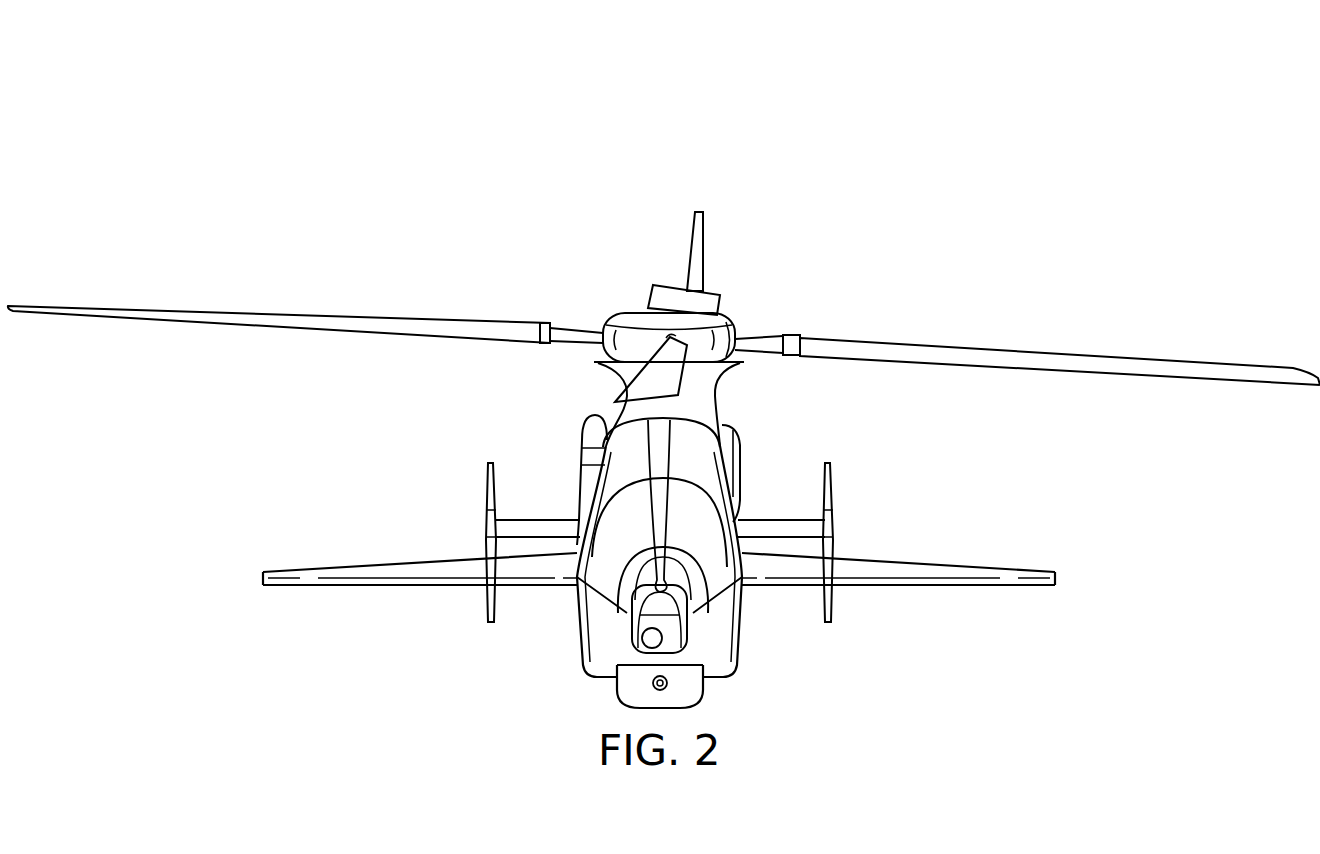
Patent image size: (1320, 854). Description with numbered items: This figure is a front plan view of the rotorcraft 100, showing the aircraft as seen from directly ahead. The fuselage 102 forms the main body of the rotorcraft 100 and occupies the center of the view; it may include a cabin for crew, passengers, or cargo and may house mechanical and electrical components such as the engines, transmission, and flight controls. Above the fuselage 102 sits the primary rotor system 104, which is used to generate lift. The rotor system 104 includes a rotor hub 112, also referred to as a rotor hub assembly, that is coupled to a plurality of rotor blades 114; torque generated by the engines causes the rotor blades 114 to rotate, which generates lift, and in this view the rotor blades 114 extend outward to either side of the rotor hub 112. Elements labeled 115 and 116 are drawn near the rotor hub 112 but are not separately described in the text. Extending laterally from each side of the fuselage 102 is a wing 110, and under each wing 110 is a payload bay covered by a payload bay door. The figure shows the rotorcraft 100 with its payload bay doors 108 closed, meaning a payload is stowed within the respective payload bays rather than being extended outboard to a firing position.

The rotorcraft 100 is at (286, 163).
The fuselage 102 is at (590, 432).
The primary rotor system 104 is at (739, 226).
The payload bay doors 108 is at (565, 638).
The wing 110 is at (368, 563).
The rotor hub 112 is at (744, 322).
The rotor blades 114 is at (296, 308).
The blade grip 115 is at (573, 327).
The hub housing 116 is at (622, 313).